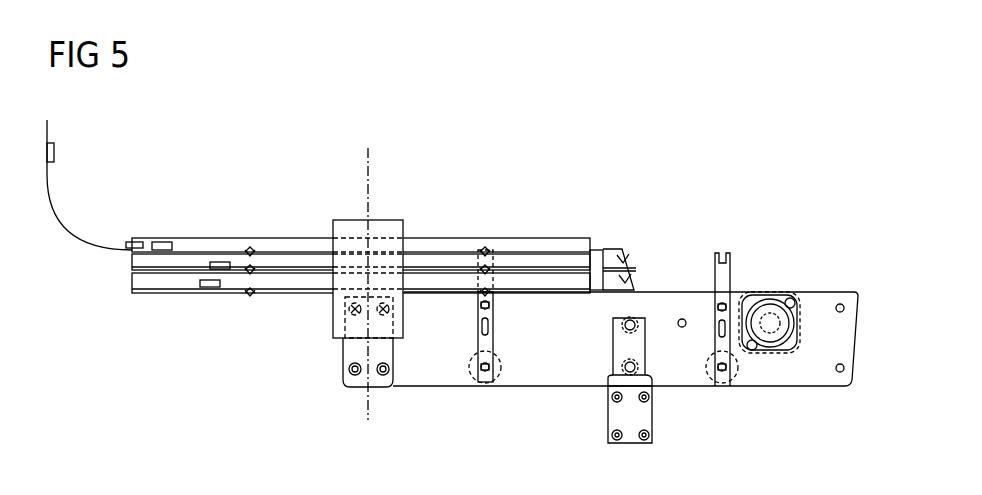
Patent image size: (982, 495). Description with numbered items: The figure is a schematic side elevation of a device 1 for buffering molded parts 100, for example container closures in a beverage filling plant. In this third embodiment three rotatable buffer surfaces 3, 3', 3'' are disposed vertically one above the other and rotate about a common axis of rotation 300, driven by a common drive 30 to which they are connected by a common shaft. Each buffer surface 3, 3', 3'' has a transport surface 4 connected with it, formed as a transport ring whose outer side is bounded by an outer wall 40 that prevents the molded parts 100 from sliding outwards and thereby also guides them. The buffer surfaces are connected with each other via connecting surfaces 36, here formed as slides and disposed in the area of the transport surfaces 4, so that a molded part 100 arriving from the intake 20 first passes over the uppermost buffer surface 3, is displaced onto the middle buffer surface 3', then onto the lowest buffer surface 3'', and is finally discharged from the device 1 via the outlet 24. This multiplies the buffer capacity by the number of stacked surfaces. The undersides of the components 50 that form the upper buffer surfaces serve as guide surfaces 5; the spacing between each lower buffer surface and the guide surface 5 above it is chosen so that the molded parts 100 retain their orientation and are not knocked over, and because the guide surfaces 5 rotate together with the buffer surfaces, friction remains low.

The device for buffering molded parts 1 is at (702, 136).
The uppermost buffer surface 3 is at (361, 221).
The middle buffer surface 3' is at (361, 294).
The lowest buffer surface 3'' is at (361, 310).
The transport surface 4 is at (600, 250).
The guide surface 5 is at (297, 271).
The intake 20 is at (50, 128).
The outlet 24 is at (808, 292).
The drive 30 is at (362, 381).
The connecting surface 36 is at (625, 259).
The outer wall 40 is at (134, 255).
The component forming the buffer surface 50 is at (447, 272).
The molded part 100 is at (55, 152).
The axis of rotation 300 is at (370, 155).